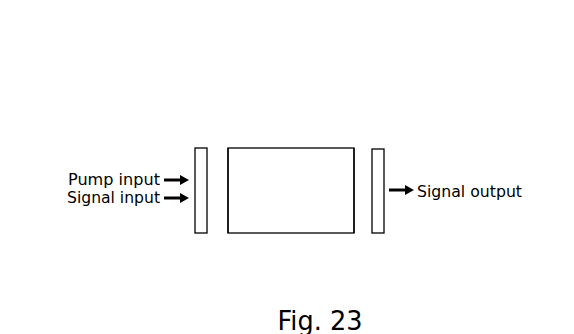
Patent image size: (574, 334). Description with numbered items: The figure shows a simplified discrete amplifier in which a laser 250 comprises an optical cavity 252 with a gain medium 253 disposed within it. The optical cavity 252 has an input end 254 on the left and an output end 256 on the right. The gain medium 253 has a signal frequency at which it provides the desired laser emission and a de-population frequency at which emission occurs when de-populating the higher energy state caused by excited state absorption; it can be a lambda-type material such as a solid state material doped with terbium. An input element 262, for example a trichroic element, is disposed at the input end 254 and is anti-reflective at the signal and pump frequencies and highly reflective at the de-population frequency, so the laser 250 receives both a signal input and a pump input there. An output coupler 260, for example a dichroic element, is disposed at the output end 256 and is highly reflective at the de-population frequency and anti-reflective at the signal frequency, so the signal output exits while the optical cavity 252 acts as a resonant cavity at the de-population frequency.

The laser 250 is at (102, 35).
The optical cavity 252 is at (177, 111).
The gain medium 253 is at (275, 202).
The input end 254 is at (229, 154).
The output end 256 is at (354, 150).
The output coupler 260 is at (384, 232).
The input element 262 is at (207, 230).